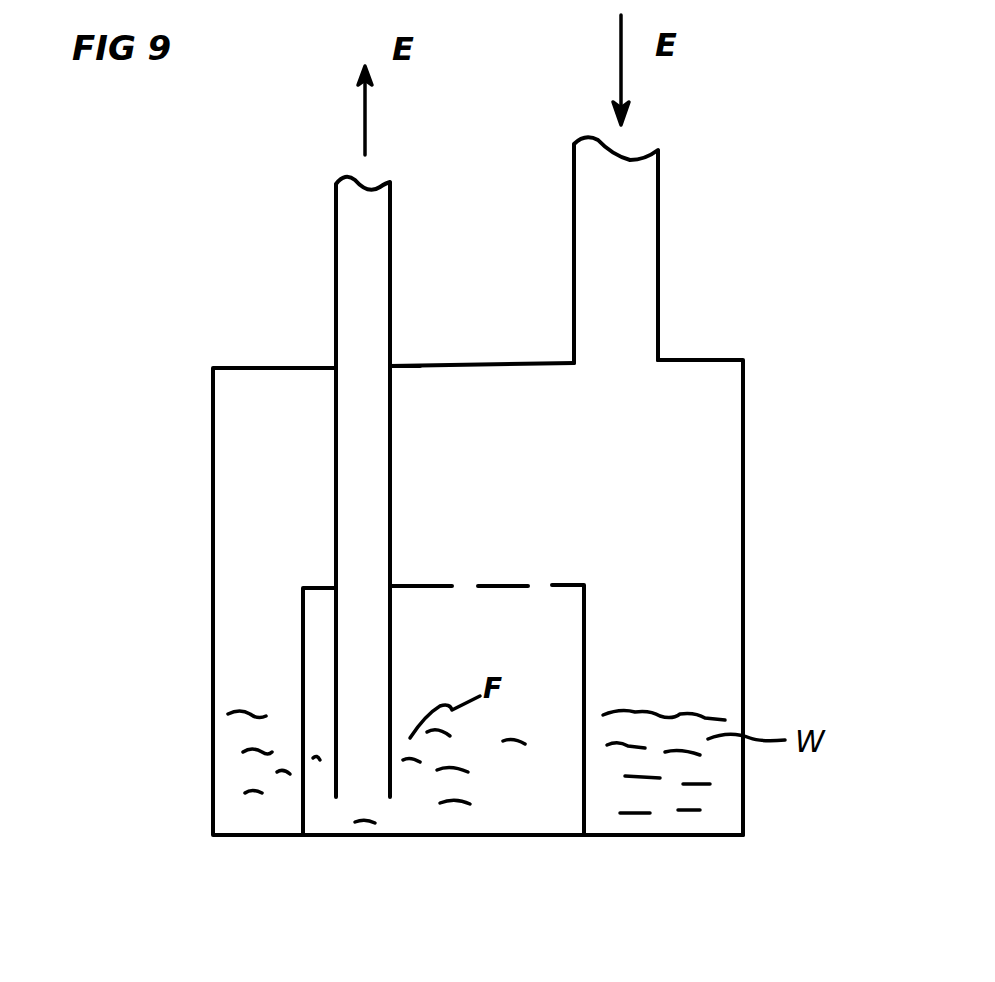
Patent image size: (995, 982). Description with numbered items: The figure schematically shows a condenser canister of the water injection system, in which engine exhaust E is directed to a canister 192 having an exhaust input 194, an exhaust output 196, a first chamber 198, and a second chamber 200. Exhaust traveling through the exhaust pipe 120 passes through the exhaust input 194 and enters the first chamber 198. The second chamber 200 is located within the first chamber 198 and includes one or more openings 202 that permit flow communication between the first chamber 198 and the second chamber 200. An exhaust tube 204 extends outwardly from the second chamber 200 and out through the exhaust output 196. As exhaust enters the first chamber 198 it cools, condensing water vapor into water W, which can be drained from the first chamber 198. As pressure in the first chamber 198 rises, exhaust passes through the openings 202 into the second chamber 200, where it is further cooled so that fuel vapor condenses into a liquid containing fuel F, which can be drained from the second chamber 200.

The exhaust pipe 120 is at (660, 212).
The canister 192 is at (774, 493).
The exhaust input 194 is at (660, 355).
The exhaust output 196 is at (393, 360).
The first chamber 198 is at (713, 633).
The second chamber 200 is at (507, 813).
The openings 202 is at (462, 586).
The exhaust tube 204 is at (372, 498).